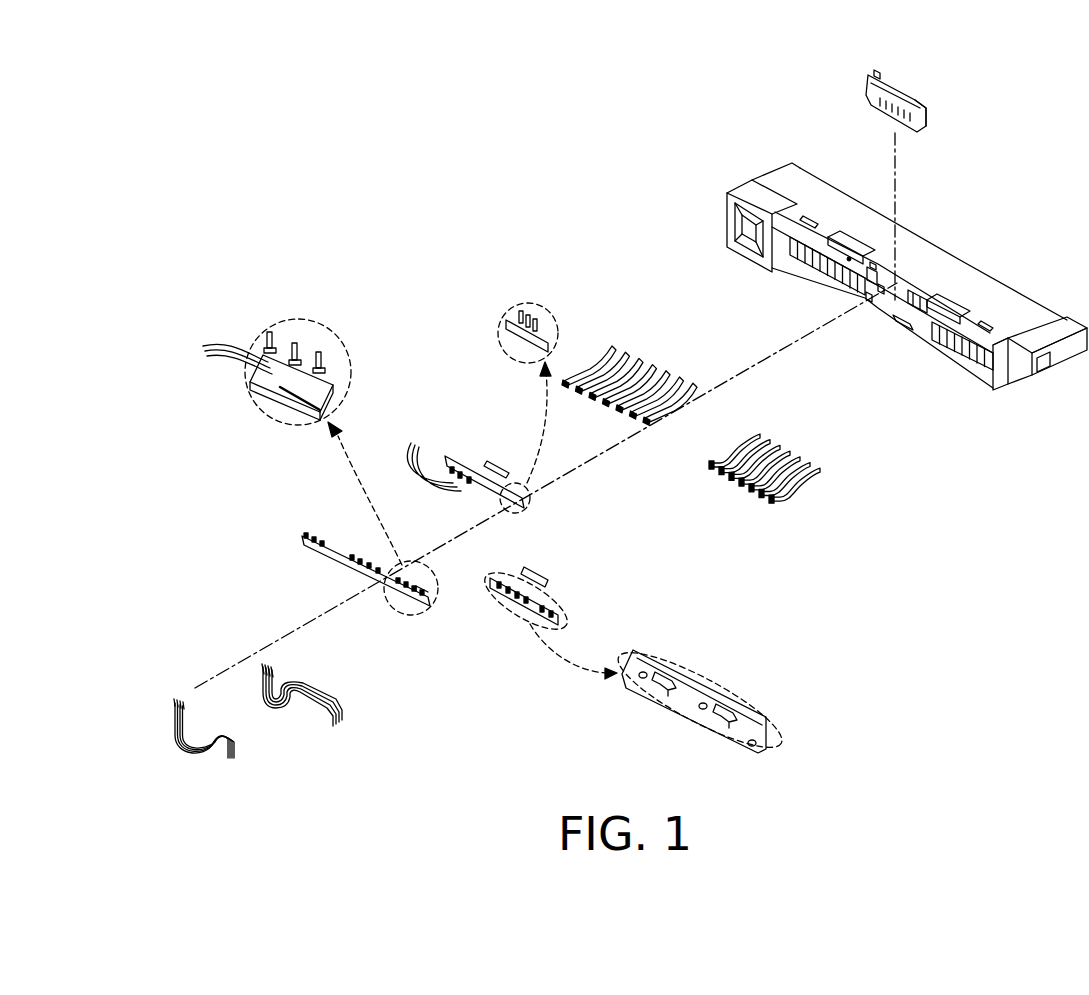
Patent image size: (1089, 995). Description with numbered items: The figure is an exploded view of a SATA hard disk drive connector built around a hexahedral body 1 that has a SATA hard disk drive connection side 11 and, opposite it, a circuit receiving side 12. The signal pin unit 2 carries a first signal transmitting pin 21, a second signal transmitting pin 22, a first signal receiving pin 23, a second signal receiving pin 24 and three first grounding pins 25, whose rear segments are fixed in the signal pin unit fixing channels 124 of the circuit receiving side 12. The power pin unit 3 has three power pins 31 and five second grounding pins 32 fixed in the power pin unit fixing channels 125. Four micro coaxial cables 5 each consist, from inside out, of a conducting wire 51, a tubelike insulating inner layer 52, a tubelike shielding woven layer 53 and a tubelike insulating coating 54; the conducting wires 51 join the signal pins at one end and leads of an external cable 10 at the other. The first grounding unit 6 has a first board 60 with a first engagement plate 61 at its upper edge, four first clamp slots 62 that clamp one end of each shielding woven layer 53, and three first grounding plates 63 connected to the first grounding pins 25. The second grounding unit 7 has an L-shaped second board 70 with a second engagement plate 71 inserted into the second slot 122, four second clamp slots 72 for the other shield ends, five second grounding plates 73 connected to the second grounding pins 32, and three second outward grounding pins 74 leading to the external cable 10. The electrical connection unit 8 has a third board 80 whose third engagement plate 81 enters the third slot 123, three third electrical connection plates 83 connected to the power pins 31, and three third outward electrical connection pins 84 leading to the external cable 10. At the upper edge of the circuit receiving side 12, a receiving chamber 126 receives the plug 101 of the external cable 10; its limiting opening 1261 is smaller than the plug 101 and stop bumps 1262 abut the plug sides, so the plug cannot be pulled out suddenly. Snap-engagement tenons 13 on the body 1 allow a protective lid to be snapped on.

The body 1 is at (737, 151).
The external cable 10 is at (923, 76).
The plug 101 is at (928, 120).
The SATA hard disk drive connection side 11 is at (983, 272).
The circuit receiving side 12 is at (910, 430).
The second slot 122 is at (898, 330).
The third slot 123 is at (849, 256).
The signal pin unit fixing channels 124 is at (963, 350).
The power pin unit fixing channels 125 is at (818, 270).
The receiving chamber 126 is at (908, 292).
The limiting opening 1261 is at (904, 278).
The stop bump 1262 is at (912, 300).
The snap-engagement tenons 13 is at (812, 216).
The signal pin unit 2 is at (893, 628).
The first signal transmitting pin 21 is at (768, 487).
The second signal transmitting pin 22 is at (760, 493).
The first signal receiving pin 23 is at (722, 478).
The second signal receiving pin 24 is at (735, 484).
The first grounding pins 25 is at (713, 470).
The power pin unit 3 is at (603, 242).
The power pins 31 is at (644, 356).
The second grounding pins 32 is at (616, 348).
The micro coaxial cables 5 is at (172, 686).
The conducting wire 51 is at (175, 704).
The tubelike insulating inner layer 52 is at (177, 709).
The tubelike shielding woven layer 53 is at (179, 714).
The tubelike insulating coating 54 is at (181, 719).
The first grounding unit 6 is at (578, 578).
The first board 60 is at (562, 615).
The first engagement plate 61 is at (540, 574).
The first clamp slots 62 is at (656, 676).
The first grounding plates 63 is at (640, 677).
The second grounding unit 7 is at (286, 504).
The second board 70 is at (301, 538).
The second engagement plate 71 is at (332, 392).
The second clamp slots 72 is at (223, 357).
The second grounding plates 73 is at (380, 574).
The second outward grounding pins 74 is at (314, 352).
The electrical connection unit 8 is at (431, 414).
The third board 80 is at (452, 466).
The third engagement plate 81 is at (494, 467).
The third electrical connection plates 83 is at (431, 455).
The third outward electrical connection pins 84 is at (530, 314).